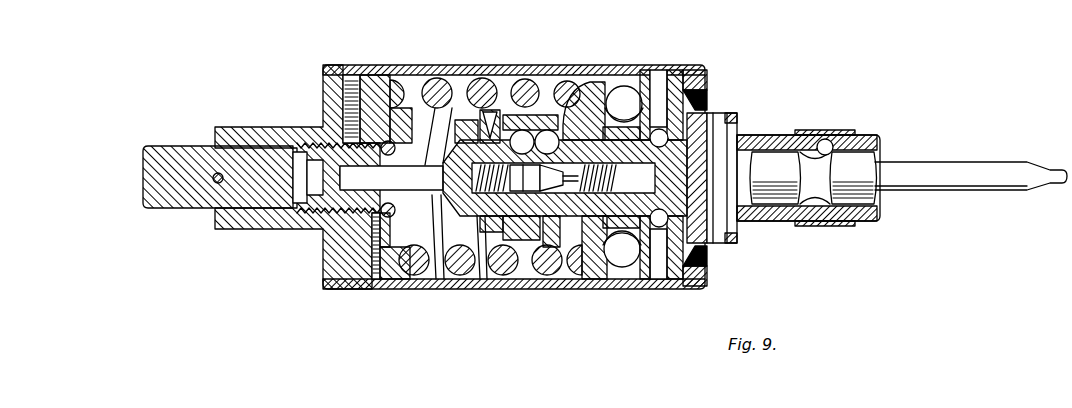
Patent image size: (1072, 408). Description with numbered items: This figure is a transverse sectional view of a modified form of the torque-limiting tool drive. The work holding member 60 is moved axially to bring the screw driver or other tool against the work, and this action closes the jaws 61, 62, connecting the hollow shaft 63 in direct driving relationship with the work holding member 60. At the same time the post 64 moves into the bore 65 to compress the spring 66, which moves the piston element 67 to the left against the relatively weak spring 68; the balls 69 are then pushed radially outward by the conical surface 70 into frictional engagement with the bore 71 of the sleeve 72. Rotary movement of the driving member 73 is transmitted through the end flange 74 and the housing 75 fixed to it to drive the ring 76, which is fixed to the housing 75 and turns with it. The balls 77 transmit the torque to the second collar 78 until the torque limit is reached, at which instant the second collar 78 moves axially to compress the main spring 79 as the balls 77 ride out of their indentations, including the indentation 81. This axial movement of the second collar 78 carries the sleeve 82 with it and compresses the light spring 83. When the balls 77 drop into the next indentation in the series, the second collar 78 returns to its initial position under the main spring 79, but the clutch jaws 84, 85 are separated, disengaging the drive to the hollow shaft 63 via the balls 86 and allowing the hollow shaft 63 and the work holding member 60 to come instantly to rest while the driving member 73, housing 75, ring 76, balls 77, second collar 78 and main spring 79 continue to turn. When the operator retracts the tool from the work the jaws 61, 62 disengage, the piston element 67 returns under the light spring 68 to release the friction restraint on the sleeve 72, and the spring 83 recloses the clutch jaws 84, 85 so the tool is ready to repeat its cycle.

The work holding member 60 is at (874, 137).
The jaw 61 is at (715, 131).
The jaw 62 is at (701, 109).
The hollow shaft 63 is at (565, 232).
The post 64 is at (730, 233).
The bore 65 is at (630, 268).
The spring 66 is at (618, 178).
The piston element 67 is at (548, 248).
The weak spring 68 is at (450, 222).
The balls 69 is at (520, 222).
The conical surface 70 is at (560, 247).
The bore 71 is at (483, 222).
The sleeve 72 is at (542, 241).
The driving member 73 is at (185, 208).
The end flange 74 is at (340, 258).
The housing 75 is at (407, 68).
The ring 76 is at (685, 88).
The balls 77 is at (652, 102).
The second collar 78 is at (590, 279).
The main spring 79 is at (438, 80).
The indentation 81 is at (634, 88).
The sleeve 82 is at (548, 130).
The light spring 83 is at (490, 112).
The clutch jaw 84 is at (560, 113).
The clutch jaw 85 is at (590, 84).
The balls 86 is at (522, 130).